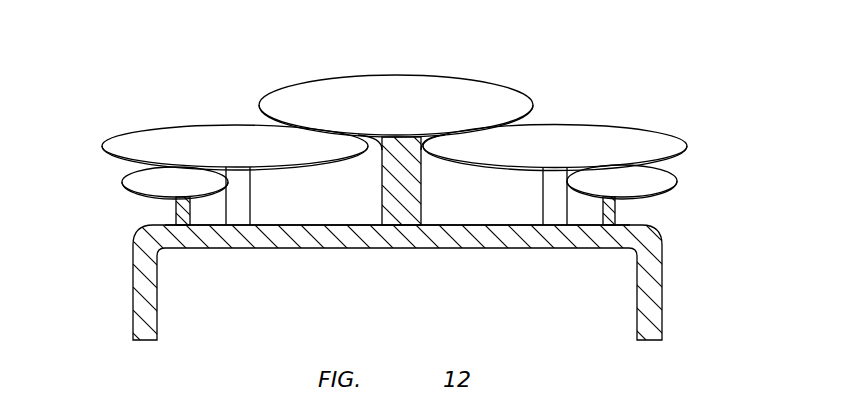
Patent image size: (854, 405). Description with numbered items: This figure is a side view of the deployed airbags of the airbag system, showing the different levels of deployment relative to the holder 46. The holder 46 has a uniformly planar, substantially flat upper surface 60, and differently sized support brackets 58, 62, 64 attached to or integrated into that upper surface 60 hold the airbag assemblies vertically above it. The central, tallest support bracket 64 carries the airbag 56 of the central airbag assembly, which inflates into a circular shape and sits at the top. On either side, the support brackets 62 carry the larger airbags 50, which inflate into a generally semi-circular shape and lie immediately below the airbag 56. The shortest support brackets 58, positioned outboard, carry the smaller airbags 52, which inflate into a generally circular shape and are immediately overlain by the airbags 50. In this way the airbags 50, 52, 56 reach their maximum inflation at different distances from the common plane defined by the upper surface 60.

The holder 46 is at (131, 296).
The airbags 50 is at (188, 125).
The airbags 52 is at (128, 170).
The airbag 56 is at (377, 75).
The support bracket 58 is at (176, 212).
The upper surface 60 is at (322, 250).
The support bracket 62 is at (250, 196).
The support bracket 64 is at (420, 180).